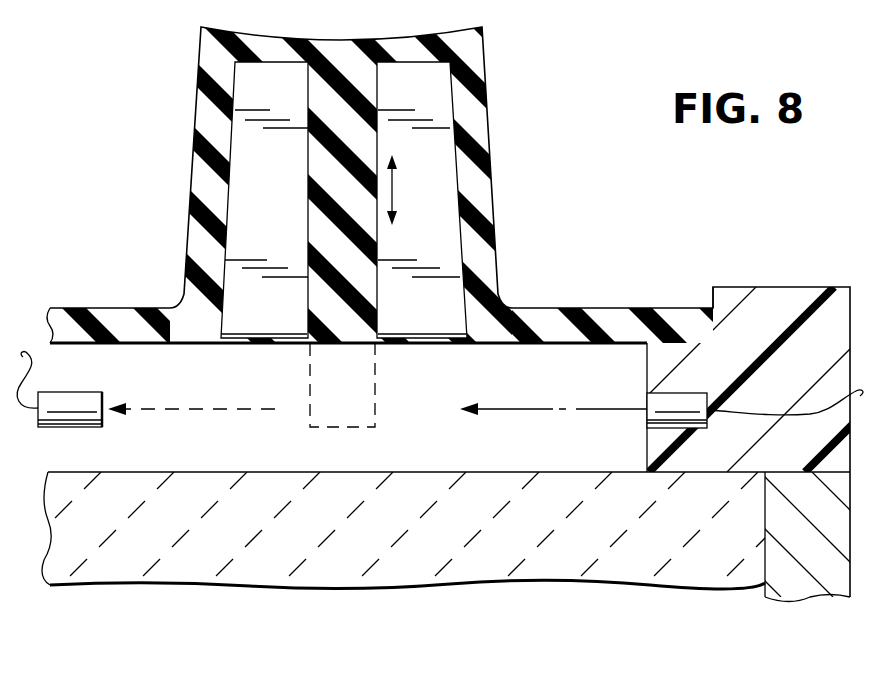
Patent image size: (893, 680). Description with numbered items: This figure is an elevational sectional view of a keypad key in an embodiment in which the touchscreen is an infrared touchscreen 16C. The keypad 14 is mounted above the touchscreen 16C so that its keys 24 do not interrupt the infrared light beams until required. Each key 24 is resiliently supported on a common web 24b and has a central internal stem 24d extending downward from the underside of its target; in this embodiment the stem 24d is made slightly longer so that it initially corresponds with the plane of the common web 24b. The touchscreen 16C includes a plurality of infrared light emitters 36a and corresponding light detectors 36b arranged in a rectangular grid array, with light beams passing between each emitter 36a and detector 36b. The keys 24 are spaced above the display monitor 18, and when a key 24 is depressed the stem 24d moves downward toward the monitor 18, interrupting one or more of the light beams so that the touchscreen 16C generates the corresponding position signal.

The keypad 14 is at (500, 120).
The key 24 is at (192, 39).
The central internal stem 24d is at (308, 218).
The common web 24b is at (108, 308).
The infrared touchscreen 16C is at (791, 278).
The infrared light emitter 36a is at (655, 404).
The light detector 36b is at (97, 428).
The display monitor 18 is at (330, 575).